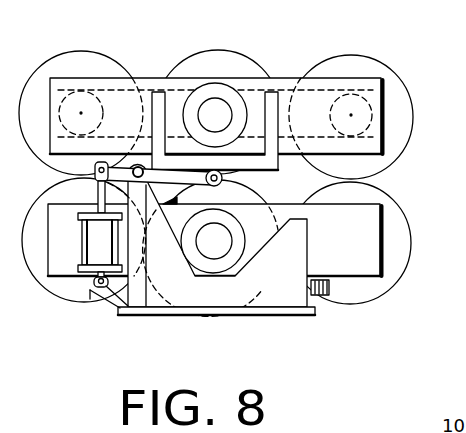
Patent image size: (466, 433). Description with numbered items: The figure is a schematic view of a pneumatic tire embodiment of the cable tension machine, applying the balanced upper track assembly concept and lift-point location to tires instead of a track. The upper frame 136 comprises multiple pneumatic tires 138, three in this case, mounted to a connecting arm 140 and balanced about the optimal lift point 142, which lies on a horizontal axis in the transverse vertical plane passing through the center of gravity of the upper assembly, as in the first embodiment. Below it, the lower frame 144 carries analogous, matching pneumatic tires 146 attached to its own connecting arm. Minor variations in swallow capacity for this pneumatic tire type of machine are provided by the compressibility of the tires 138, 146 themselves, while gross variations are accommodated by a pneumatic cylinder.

The upper frame 136 is at (302, 52).
The pneumatic tires 138 is at (183, 66).
The connecting arm 140 is at (283, 82).
The optimal lift point 142 is at (236, 171).
The lower frame 144 is at (162, 312).
The pneumatic tires 146 is at (88, 297).